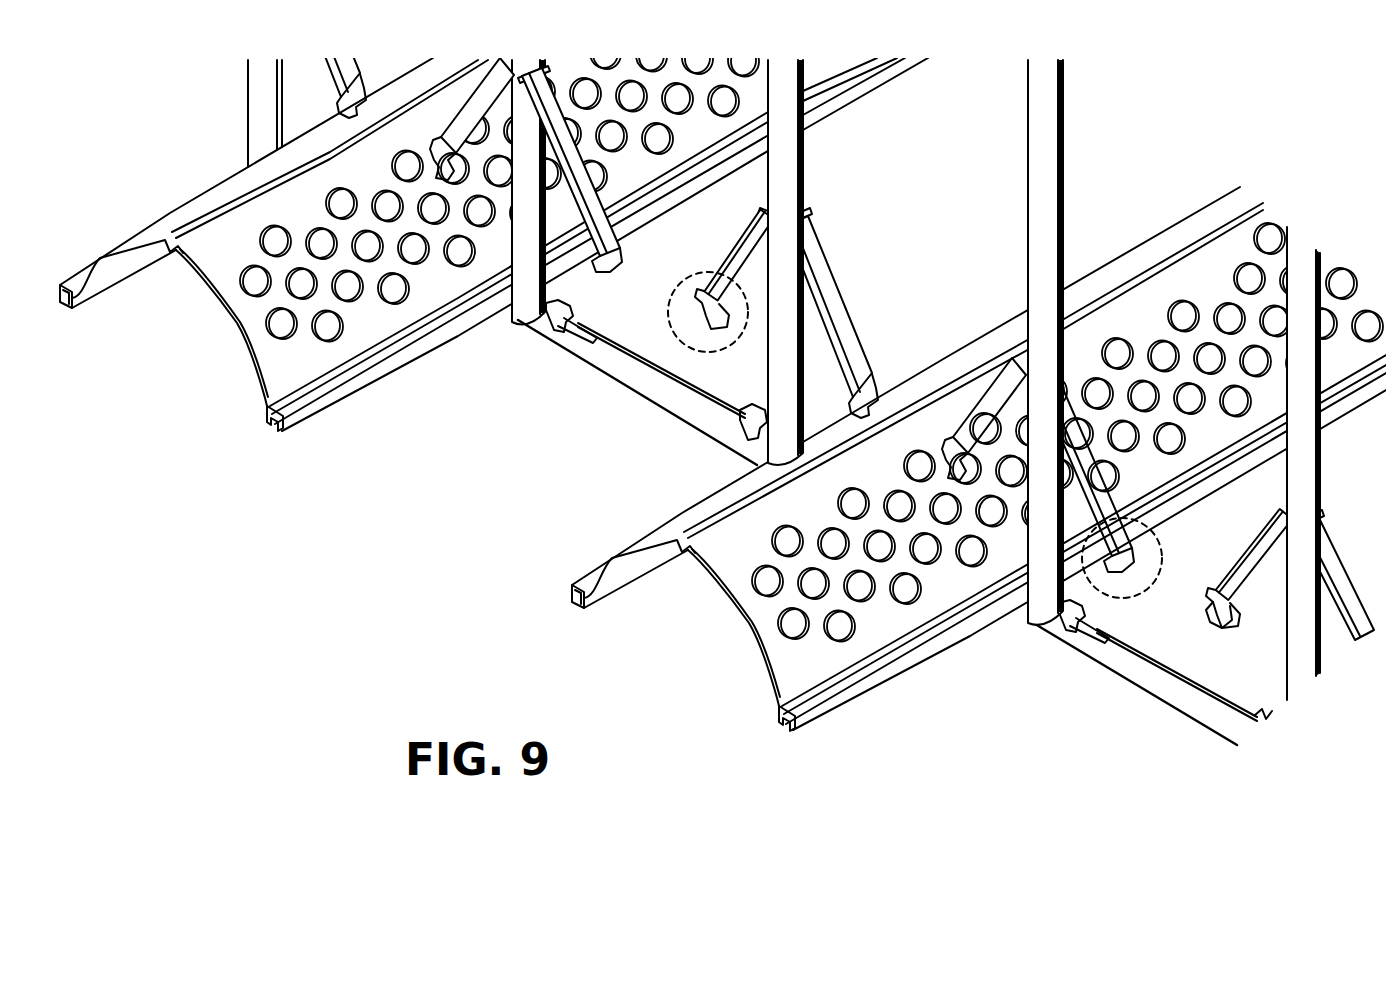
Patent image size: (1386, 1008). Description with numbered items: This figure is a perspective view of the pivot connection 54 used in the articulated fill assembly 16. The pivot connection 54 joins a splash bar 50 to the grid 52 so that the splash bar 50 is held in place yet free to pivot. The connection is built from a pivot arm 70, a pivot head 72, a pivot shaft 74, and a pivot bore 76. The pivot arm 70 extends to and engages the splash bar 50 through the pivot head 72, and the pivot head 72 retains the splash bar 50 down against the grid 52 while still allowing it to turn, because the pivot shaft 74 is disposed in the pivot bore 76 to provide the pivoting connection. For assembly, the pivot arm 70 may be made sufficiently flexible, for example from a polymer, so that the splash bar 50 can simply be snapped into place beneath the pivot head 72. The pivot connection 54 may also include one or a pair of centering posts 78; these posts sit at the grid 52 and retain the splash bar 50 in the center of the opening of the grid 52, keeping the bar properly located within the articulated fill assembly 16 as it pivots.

The articulated fill assembly 16 is at (404, 471).
The splash bar 50 is at (979, 470).
The grid 52 is at (626, 397).
The pivot connection 54 is at (947, 418).
The pivot arm 70 is at (750, 246).
The pivot head 72 is at (617, 337).
The pivot shaft 74 is at (1218, 628).
The pivot bore 76 is at (446, 152).
The centering post 78 is at (585, 308).